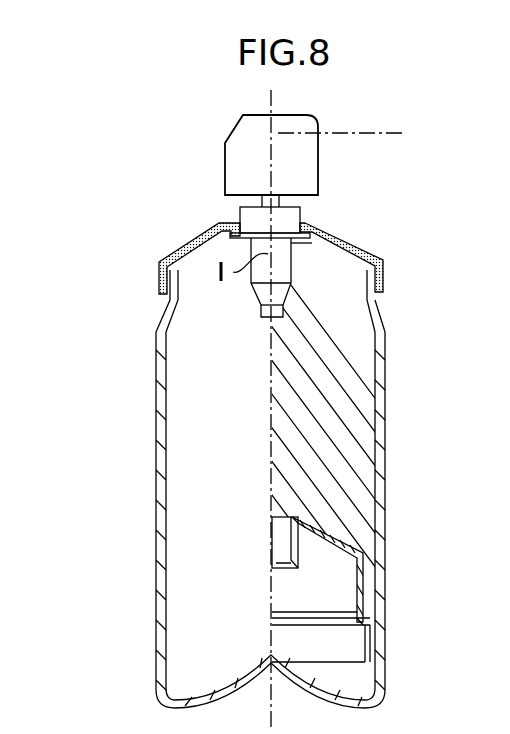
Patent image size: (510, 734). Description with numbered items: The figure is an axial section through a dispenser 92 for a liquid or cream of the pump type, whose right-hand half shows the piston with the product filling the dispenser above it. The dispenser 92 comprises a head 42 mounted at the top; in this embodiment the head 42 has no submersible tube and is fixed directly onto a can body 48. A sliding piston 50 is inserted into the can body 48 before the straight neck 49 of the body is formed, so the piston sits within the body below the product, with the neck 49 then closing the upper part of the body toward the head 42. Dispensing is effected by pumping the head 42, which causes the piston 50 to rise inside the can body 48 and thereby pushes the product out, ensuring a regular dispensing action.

The head 42 is at (196, 237).
The can body 48 is at (160, 508).
The straight neck 49 is at (162, 293).
The sliding piston 50 is at (360, 583).
The dispenser 92 is at (214, 520).